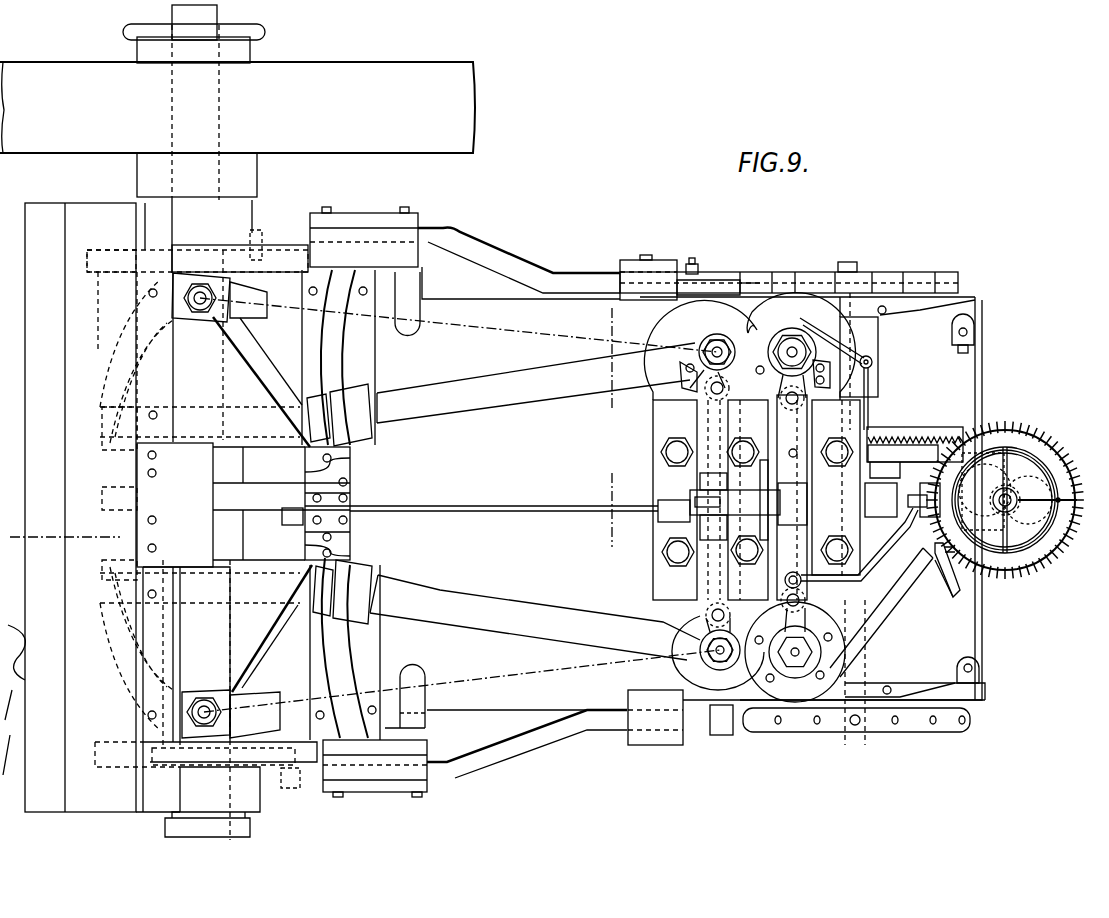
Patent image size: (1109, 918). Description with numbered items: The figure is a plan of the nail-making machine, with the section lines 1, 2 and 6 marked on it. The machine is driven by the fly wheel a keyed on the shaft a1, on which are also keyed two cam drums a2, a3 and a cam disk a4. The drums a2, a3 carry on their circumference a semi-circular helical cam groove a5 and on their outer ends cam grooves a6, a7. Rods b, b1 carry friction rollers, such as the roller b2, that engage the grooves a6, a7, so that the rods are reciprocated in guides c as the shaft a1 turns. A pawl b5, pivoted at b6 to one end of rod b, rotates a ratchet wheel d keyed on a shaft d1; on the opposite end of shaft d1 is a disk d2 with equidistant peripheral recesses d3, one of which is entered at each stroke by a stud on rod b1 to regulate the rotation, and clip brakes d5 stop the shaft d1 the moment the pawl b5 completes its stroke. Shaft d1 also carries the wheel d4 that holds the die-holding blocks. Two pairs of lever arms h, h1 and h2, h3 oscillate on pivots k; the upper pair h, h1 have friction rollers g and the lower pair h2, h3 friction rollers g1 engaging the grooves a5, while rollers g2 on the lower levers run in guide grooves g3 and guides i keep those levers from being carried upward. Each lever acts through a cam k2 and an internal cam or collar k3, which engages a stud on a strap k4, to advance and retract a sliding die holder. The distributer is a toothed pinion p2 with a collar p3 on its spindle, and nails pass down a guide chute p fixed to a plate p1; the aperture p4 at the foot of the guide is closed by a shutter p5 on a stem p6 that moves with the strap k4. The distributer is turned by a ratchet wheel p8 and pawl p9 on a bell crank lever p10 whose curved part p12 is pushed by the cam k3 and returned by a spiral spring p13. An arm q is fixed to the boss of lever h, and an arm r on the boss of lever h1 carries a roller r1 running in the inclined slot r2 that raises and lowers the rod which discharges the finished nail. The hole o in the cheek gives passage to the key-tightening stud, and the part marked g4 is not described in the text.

The fly wheel a is at (237, 107).
The shaft a1 is at (205, 14).
The cam drum a2 is at (261, 382).
The cam drum a3 is at (227, 514).
The cam disk a4 is at (262, 500).
The helical cam groove a5 is at (252, 363).
The cam groove a6 is at (210, 757).
The cam groove a7 is at (148, 254).
The rod b is at (548, 290).
The rod b1 is at (552, 740).
The friction roller b2 is at (255, 255).
The pawl b5 is at (735, 278).
The pawl pivot b6 is at (693, 264).
The guide c is at (352, 226).
The ratchet wheel d is at (905, 283).
The shaft d1 is at (848, 268).
The disk d2 is at (958, 733).
The peripheral recess d3 is at (810, 723).
The wheel d4 is at (888, 506).
The clip brake d5 is at (915, 310).
The friction roller g is at (200, 290).
The friction roller g1 is at (300, 410).
The friction roller g2 is at (338, 502).
The guide groove g3 is at (341, 505).
The guide shoe g4 is at (339, 410).
The lever arm h is at (258, 300).
The lever arm h1 is at (258, 715).
The lever arm h2 is at (536, 383).
The lever arm h3 is at (535, 617).
The guide i is at (405, 500).
The pivot k is at (722, 350).
The cam k2 is at (800, 598).
The internal cam k3 is at (690, 380).
The strap k4 is at (718, 398).
The hole o is at (903, 440).
The guide chute p is at (1006, 500).
The plate p1 is at (1005, 491).
The distributer pinion p2 is at (1020, 568).
The collar p3 is at (1058, 538).
The aperture p4 is at (872, 360).
The shutter p5 is at (878, 518).
The stem p6 is at (880, 570).
The ratchet wheel p8 is at (1040, 470).
The pawl p9 is at (1010, 438).
The bell crank lever p10 is at (870, 435).
The curved part p12 is at (792, 345).
The spiral spring p13 is at (935, 440).
The arm q is at (862, 427).
The arm r is at (881, 612).
The friction roller r1 is at (932, 565).
The inclined slot r2 is at (955, 595).
The section line 1 is at (835, 535).
The section line 2 is at (819, 497).
The section line 6 is at (618, 430).